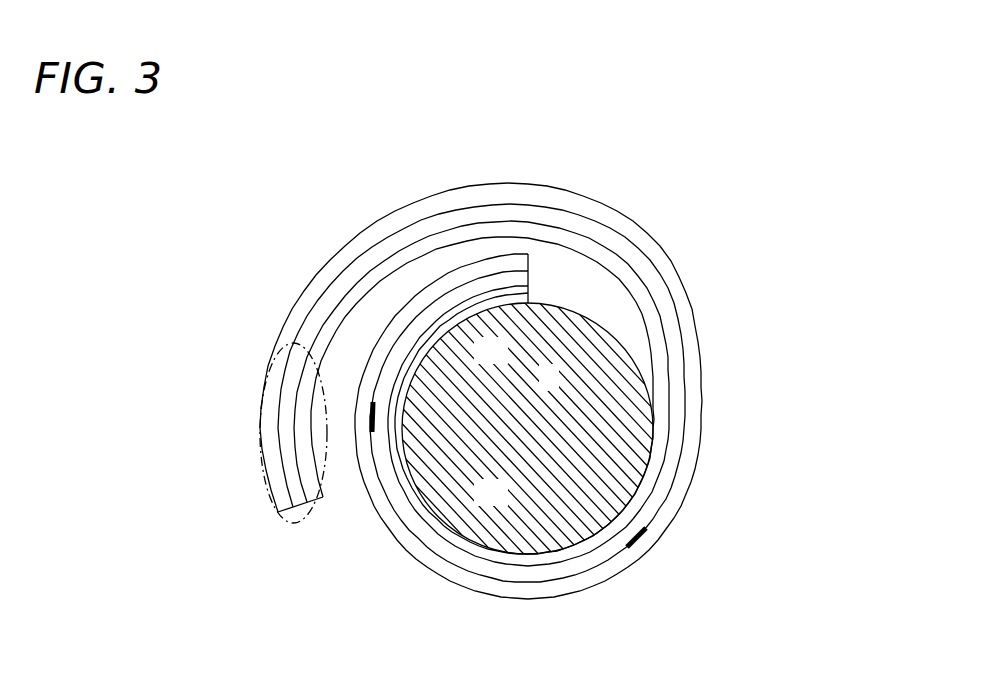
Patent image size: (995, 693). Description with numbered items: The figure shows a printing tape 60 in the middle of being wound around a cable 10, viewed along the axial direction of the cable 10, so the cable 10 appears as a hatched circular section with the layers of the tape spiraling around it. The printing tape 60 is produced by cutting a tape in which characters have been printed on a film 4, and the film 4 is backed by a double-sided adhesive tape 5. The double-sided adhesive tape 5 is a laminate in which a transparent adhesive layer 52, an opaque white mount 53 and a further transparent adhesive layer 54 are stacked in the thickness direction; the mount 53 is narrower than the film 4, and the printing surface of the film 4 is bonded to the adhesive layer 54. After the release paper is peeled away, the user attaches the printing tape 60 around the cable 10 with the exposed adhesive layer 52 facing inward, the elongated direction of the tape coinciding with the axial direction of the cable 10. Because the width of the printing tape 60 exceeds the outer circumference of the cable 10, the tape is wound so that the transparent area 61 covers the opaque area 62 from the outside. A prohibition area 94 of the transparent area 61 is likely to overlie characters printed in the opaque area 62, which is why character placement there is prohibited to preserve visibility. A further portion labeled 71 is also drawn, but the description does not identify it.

The film 4 is at (438, 435).
The double-sided adhesive tape 5 is at (438, 419).
The cable 10 is at (588, 480).
The adhesive layer 52 is at (290, 488).
The mount 53 is at (452, 312).
The adhesive layer 54 is at (278, 453).
The printing tape 60 is at (488, 419).
The transparent area 61 is at (318, 273).
The opaque area 62 is at (438, 419).
The joint portion 71 is at (369, 401).
The prohibition area 94 is at (262, 383).